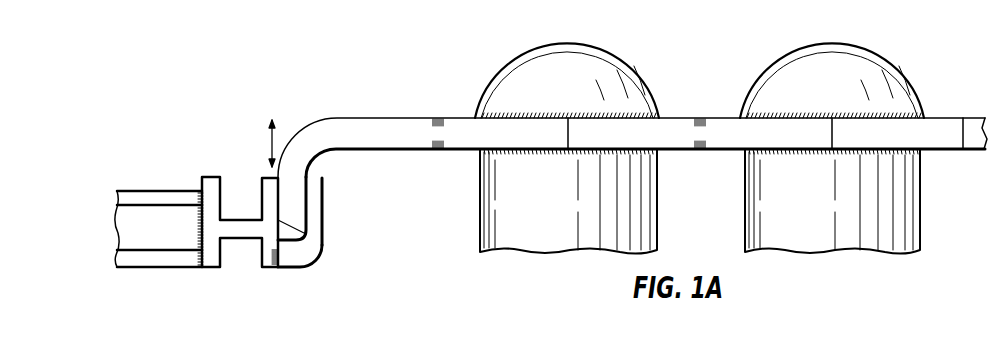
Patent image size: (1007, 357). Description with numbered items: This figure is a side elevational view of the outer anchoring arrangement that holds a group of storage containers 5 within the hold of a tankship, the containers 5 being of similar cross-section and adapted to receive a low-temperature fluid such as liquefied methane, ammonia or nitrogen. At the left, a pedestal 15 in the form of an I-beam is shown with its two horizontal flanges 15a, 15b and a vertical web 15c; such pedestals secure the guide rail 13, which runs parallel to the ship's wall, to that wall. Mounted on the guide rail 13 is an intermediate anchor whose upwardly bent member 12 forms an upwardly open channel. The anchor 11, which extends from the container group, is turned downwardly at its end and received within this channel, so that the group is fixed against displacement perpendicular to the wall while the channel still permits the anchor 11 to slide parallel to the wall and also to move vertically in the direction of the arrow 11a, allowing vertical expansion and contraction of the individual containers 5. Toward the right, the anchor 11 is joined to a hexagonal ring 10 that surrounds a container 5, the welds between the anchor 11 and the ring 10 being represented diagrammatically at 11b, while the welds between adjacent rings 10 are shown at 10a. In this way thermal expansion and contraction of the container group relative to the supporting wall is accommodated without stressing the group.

The storage receptacles or containers 5 is at (614, 58).
The hexagonal ring 10 is at (717, 125).
The welds between the rings 10a is at (703, 152).
The anchor 11 is at (295, 193).
The arrow 11a is at (268, 139).
The welds between the anchor and the hexagonal ring 11b is at (430, 140).
The oppositely bent member 12 is at (313, 217).
The guide rail 13 is at (308, 240).
The pedestal 15 is at (183, 270).
The horizontal flange 15a is at (141, 192).
The horizontal flange 15b is at (138, 258).
The vertical web 15c is at (121, 227).